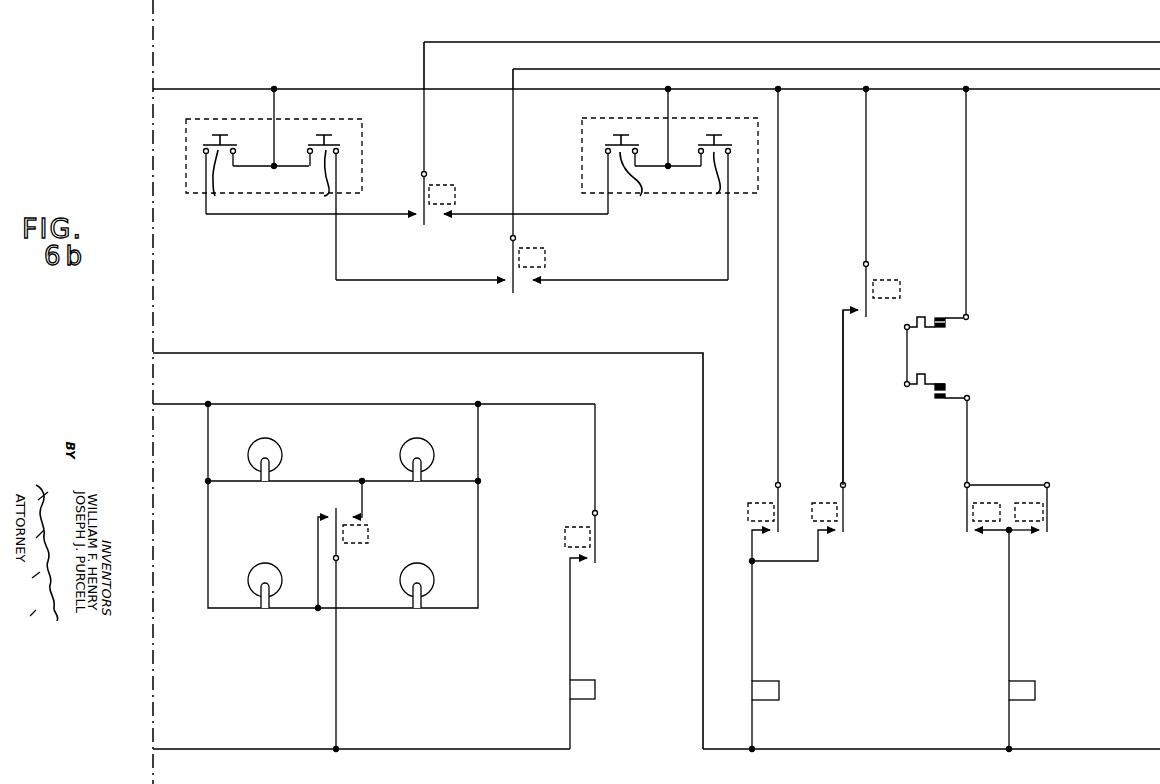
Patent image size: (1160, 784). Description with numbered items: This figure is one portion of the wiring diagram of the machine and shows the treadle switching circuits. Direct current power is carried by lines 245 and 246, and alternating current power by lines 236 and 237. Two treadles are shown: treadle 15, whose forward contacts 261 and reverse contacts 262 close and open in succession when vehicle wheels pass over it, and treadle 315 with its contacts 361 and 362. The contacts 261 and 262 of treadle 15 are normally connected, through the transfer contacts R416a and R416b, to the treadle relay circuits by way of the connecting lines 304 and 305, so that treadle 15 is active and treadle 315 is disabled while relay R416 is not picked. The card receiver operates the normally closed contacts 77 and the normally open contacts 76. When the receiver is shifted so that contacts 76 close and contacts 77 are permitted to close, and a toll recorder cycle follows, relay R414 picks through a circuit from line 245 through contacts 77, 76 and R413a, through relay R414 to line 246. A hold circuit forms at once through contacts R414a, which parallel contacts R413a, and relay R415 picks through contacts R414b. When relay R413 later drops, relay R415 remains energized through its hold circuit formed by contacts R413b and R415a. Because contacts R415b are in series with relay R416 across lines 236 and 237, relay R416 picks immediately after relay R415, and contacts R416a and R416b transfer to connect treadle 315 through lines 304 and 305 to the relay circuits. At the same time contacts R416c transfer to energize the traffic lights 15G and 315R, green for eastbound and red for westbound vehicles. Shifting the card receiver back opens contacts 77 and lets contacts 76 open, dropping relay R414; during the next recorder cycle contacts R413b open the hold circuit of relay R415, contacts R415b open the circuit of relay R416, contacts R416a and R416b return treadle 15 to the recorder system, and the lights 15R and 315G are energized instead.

The direct current power line 245 is at (332, 89).
The connecting line 304 is at (424, 60).
The connecting line 305 is at (535, 71).
The treadle 15 is at (287, 184).
The forward contacts 261 is at (225, 175).
The reverse contacts 262 is at (313, 207).
The treadle 315 is at (670, 184).
The treadle contacts 361 is at (624, 175).
The treadle contacts 362 is at (707, 207).
The relay contacts R416a is at (422, 215).
The relay contacts R416b is at (512, 284).
The relay contacts R413b is at (862, 305).
The normally closed contacts 77 is at (928, 318).
The normally open contacts 76 is at (944, 388).
The direct current power line 246 is at (366, 350).
The power line 236 is at (331, 404).
The green traffic light 15G is at (268, 439).
The red traffic light 315R is at (421, 440).
The red traffic light 15R is at (264, 567).
The green traffic light 315G is at (412, 570).
The relay contacts R416c is at (340, 509).
The relay contacts R415b is at (594, 561).
The relay R416 is at (584, 700).
The power line 237 is at (459, 749).
The relay contacts R414b is at (772, 530).
The relay contacts R415a is at (841, 536).
The relay R415 is at (769, 701).
The relay contacts R414a is at (978, 530).
The relay contacts R413a is at (1040, 536).
The relay R414 is at (1028, 701).